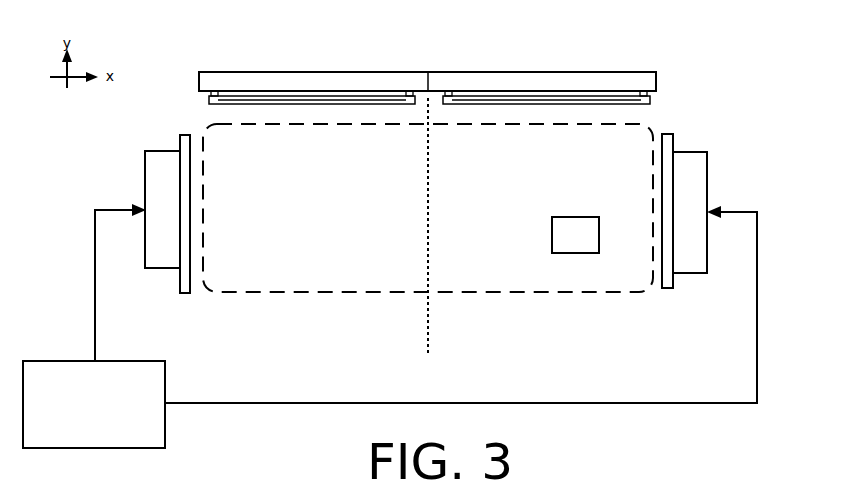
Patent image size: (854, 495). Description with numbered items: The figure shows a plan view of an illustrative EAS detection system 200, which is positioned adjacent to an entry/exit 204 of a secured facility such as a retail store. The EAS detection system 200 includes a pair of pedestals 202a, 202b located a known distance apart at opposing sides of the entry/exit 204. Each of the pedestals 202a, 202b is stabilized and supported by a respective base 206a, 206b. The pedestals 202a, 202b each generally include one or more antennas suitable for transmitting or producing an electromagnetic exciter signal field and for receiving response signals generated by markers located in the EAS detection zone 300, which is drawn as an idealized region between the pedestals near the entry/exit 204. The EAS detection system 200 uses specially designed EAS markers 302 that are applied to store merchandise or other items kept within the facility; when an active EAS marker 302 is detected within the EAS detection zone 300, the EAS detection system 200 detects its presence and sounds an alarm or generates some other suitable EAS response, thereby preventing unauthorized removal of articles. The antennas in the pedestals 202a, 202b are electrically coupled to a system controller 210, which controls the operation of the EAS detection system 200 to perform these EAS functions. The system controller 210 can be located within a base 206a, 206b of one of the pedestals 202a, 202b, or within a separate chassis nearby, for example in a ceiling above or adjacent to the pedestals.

The EAS detection system 200 is at (710, 58).
The entry/exit 204 is at (567, 72).
The base 206a is at (145, 163).
The base 206b is at (697, 150).
The pedestal 202a is at (180, 271).
The pedestal 202b is at (673, 274).
The EAS detection zone 300 is at (462, 292).
The EAS marker 302 is at (575, 235).
The system controller 210 is at (390, 326).